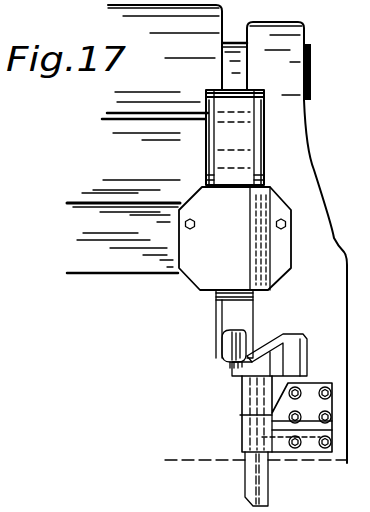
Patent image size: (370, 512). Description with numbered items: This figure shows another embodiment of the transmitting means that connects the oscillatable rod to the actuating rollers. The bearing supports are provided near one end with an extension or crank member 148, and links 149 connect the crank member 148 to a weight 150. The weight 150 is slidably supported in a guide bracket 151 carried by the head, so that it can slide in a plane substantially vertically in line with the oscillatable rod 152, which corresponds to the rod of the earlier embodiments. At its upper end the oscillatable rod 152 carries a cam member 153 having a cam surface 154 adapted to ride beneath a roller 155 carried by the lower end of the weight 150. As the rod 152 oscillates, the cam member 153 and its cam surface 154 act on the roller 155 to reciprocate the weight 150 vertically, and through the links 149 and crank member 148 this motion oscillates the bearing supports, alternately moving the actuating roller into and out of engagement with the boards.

The crank member 148 is at (246, 99).
The links 149 is at (206, 148).
The weight 150 is at (232, 301).
The guide bracket 151 is at (235, 238).
The oscillatable rod 152 is at (262, 485).
The cam member 153 is at (306, 337).
The cam surface 154 is at (265, 344).
The roller 155 is at (232, 344).